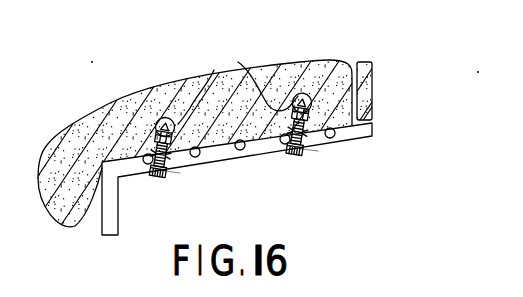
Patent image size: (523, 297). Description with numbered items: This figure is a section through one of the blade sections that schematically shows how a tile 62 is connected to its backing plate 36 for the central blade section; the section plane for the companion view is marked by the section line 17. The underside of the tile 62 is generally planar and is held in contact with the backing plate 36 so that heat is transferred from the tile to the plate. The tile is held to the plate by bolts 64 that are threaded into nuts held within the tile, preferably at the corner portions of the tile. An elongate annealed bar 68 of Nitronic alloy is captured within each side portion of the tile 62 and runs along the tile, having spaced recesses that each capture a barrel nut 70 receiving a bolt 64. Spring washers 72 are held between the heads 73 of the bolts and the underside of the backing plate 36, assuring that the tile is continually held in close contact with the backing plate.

The section line 17- 17 is at (297, 53).
The backing plate 36 is at (264, 151).
The tile 62 is at (177, 120).
The bolt 64 is at (178, 175).
The elongate annealed bar 68 is at (311, 100).
The barrel nut 70 is at (238, 83).
The spring washer 72 is at (163, 174).
The bolt head 73 is at (179, 176).